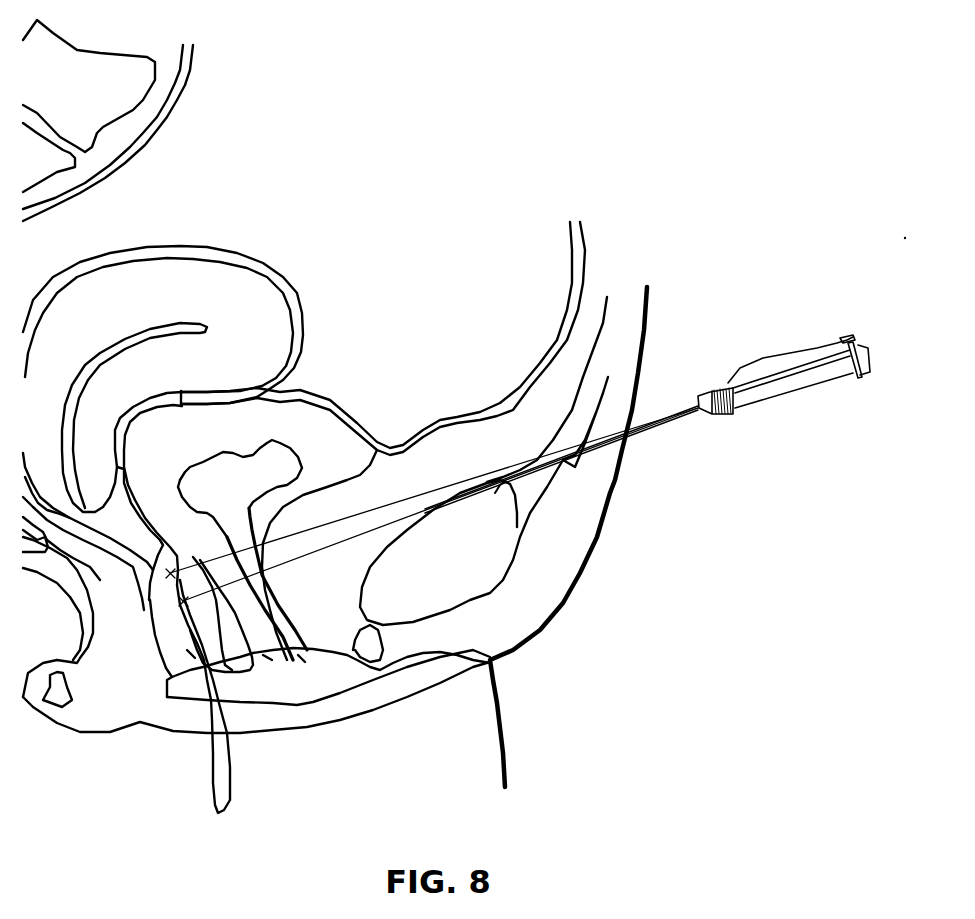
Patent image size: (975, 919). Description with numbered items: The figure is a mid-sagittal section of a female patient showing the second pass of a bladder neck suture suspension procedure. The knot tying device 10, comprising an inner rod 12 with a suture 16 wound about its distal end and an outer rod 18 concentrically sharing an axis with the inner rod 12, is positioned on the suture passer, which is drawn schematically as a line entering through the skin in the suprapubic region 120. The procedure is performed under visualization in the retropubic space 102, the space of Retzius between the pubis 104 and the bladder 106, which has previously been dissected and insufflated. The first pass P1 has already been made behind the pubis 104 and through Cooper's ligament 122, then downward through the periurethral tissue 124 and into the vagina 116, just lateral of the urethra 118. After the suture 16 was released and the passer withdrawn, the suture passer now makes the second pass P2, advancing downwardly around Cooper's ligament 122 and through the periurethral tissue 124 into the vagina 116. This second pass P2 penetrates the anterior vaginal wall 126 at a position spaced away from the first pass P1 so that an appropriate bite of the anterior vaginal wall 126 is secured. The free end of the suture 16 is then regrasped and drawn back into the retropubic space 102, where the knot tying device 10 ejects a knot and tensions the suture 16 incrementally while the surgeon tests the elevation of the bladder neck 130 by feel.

The knot tying device 10 is at (797, 330).
The inner rod 12 is at (700, 395).
The suture 16 is at (210, 780).
The outer rod 18 is at (787, 398).
The retropubic space 102 is at (437, 457).
The pubis 104 is at (473, 557).
The bladder 106 is at (280, 458).
The vagina 116 is at (187, 650).
The urethra 118 is at (302, 660).
The suprapubic region 120 is at (547, 480).
The Cooper's ligament 122 is at (517, 523).
The periurethral tissue 124 is at (268, 657).
The anterior vaginal wall 126 is at (163, 543).
The bladder neck 130 is at (242, 535).
The first pass P1 is at (313, 562).
The second pass P2 is at (385, 505).